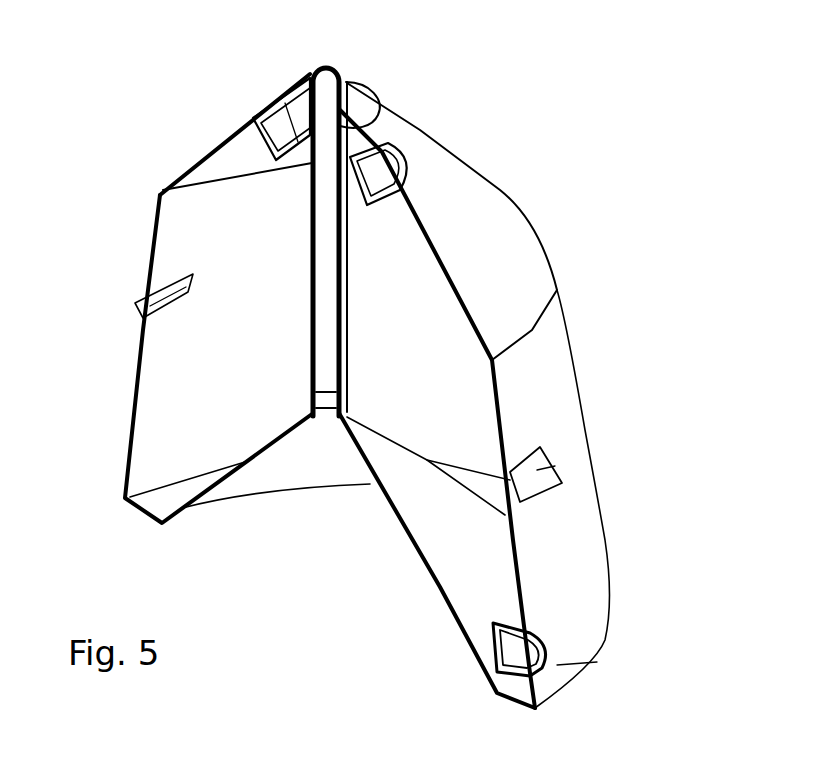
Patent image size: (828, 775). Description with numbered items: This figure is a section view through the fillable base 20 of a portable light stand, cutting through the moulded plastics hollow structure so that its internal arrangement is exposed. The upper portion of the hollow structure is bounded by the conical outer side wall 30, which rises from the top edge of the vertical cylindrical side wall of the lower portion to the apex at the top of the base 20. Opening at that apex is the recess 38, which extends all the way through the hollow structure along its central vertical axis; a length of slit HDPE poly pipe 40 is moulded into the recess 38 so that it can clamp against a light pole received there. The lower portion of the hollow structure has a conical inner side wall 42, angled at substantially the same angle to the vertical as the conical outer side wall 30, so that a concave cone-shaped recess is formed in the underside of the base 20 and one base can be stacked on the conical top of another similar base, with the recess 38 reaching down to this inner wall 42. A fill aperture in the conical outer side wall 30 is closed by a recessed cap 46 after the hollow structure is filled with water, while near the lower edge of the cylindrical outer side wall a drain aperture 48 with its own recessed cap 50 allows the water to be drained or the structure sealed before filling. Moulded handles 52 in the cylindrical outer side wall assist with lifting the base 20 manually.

The fillable base 20 is at (577, 206).
The conical outer side wall 30 is at (500, 203).
The recess 38 is at (323, 424).
The HDPE poly pipe 40 is at (335, 62).
The conical inner side wall 42 is at (408, 547).
The recessed cap 46 is at (362, 152).
The drain aperture 48 is at (597, 662).
The recessed cap 50 is at (553, 640).
The moulded handles 52 is at (537, 468).